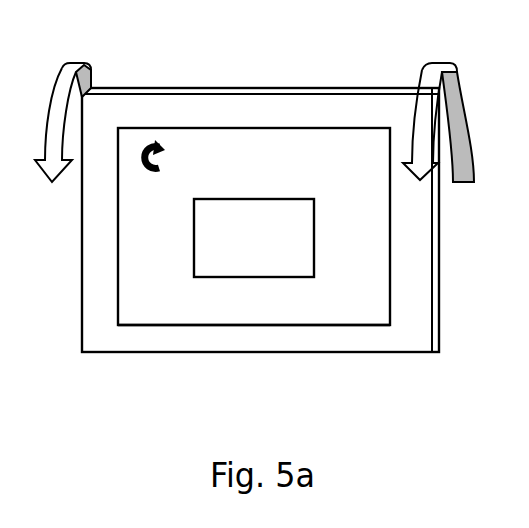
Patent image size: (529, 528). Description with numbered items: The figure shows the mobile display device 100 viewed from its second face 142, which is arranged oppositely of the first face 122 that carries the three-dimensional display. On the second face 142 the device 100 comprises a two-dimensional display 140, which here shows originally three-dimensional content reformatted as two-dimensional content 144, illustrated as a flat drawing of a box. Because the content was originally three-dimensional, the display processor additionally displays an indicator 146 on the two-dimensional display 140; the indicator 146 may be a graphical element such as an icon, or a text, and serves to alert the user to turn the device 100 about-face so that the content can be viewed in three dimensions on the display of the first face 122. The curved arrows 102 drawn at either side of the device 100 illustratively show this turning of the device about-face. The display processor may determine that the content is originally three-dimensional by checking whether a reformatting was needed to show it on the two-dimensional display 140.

The mobile display device 100 is at (134, 66).
The curved arrows 102 is at (58, 195).
The first face 122 is at (297, 87).
The 2D display 140 is at (345, 325).
The second face 142 is at (248, 115).
The 2D content 144 is at (243, 283).
The indicator 146 is at (152, 177).